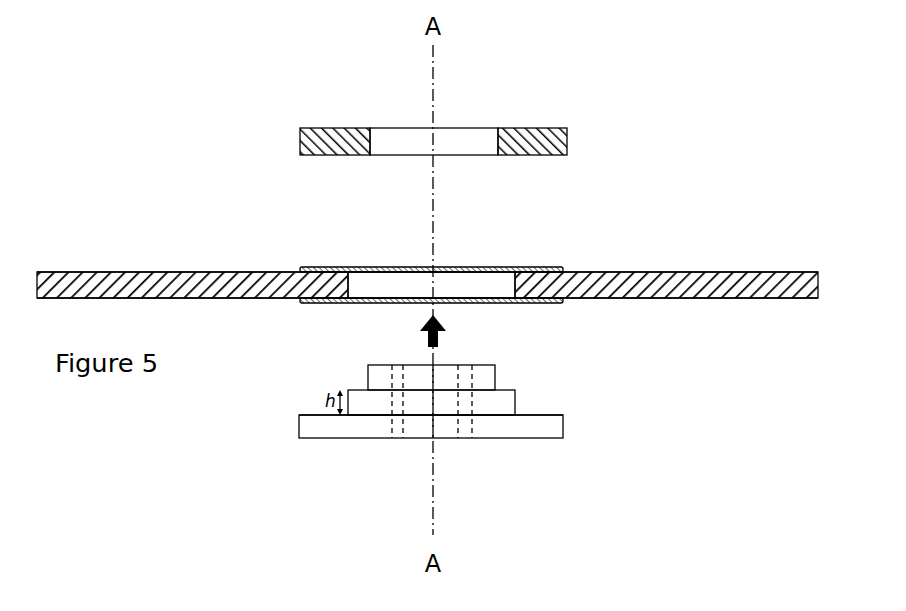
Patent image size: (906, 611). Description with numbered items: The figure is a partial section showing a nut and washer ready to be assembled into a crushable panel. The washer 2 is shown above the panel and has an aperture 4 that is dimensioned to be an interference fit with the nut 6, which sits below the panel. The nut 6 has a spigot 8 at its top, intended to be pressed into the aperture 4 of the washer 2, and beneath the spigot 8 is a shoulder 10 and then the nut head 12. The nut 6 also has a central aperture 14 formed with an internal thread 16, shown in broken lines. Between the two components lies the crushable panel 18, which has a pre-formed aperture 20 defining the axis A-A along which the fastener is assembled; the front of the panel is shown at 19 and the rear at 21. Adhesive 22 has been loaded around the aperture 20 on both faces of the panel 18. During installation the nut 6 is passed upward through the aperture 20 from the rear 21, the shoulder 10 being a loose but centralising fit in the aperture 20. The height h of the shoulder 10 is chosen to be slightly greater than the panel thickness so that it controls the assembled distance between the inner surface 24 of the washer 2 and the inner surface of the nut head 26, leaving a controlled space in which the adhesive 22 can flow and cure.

The washer 2 is at (433, 133).
The aperture 4 is at (400, 143).
The nut 6 is at (419, 423).
The spigot 8 is at (495, 371).
The shoulder 10 is at (514, 398).
The nut head 12 is at (475, 441).
The aperture 14 is at (436, 432).
The internal thread 16 is at (398, 438).
The crushable panel 18 is at (422, 305).
The front of the panel 19 is at (83, 272).
The pre-formed aperture 20 is at (450, 288).
The rear of the panel 21 is at (45, 300).
The adhesive 22 is at (318, 303).
The inner surface of the washer 24 is at (334, 157).
The inner surface of the nut head 26 is at (538, 415).